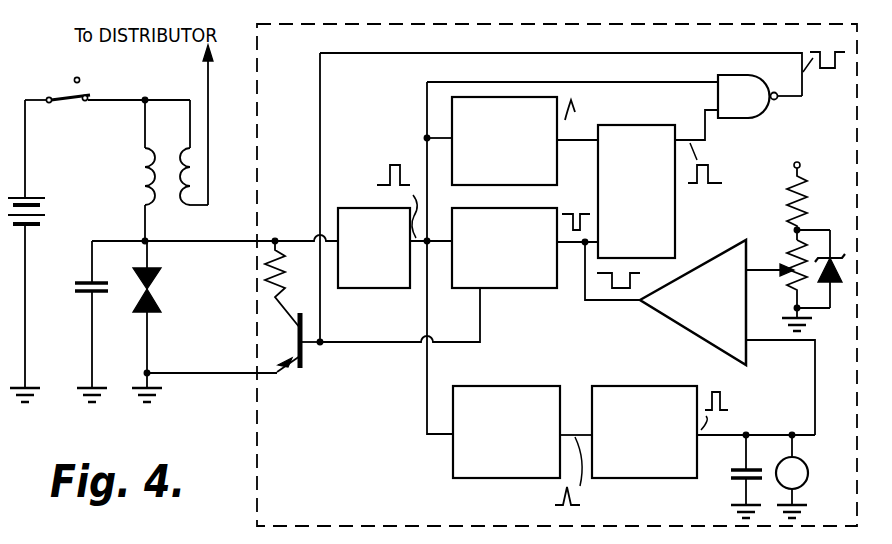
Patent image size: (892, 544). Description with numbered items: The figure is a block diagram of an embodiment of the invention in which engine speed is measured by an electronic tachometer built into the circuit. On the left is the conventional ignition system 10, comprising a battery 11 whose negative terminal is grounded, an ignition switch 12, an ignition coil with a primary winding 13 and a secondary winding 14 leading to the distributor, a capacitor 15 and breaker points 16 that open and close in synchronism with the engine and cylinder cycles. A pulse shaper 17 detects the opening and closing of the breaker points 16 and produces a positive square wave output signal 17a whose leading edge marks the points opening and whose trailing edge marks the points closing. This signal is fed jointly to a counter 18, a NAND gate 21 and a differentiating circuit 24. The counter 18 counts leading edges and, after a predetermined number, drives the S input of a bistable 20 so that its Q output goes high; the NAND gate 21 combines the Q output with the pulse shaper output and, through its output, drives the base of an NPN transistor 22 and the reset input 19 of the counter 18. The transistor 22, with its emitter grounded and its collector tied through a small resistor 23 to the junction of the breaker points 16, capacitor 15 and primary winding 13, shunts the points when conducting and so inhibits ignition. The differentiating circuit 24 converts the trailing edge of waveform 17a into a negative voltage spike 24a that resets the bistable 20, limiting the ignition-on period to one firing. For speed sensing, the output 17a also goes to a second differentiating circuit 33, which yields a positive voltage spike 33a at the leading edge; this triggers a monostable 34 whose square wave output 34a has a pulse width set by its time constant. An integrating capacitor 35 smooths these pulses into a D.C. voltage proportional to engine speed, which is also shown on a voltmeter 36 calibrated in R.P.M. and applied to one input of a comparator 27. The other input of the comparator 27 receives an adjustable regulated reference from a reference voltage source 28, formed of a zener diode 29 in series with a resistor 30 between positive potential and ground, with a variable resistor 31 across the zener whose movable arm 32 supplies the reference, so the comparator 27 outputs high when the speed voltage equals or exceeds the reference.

The ignition system 10 is at (67, 363).
The battery 11 is at (36, 196).
The ignition switch 12 is at (63, 97).
The primary winding 13 is at (147, 166).
The secondary winding 14 is at (184, 176).
The capacitor 15 is at (83, 283).
The breaker points 16 is at (160, 270).
The pulse shaper 17 is at (368, 206).
The output signal 17a is at (388, 168).
The counter 18 is at (527, 290).
The reset input 19 is at (480, 314).
The bistable multivibrator 20 is at (679, 205).
The NAND gate 21 is at (771, 110).
The NPN transistor 22 is at (304, 358).
The resistor 23 is at (268, 276).
The differentiating circuit 24 is at (450, 115).
The negative voltage spike 24a is at (582, 104).
The comparator 27 is at (703, 330).
The reference voltage source 28 is at (850, 345).
The zener diode 29 is at (838, 257).
The resistor 30 is at (791, 196).
The variable resistor 31 is at (792, 253).
The movable arm 32 is at (765, 274).
The differentiating circuit 33 is at (505, 386).
The positive voltage spike 33a is at (580, 499).
The monostable multivibrator 34 is at (646, 386).
The square wave output 34a is at (729, 396).
The integrating capacitor 35 is at (735, 479).
The voltmeter 36 is at (809, 479).